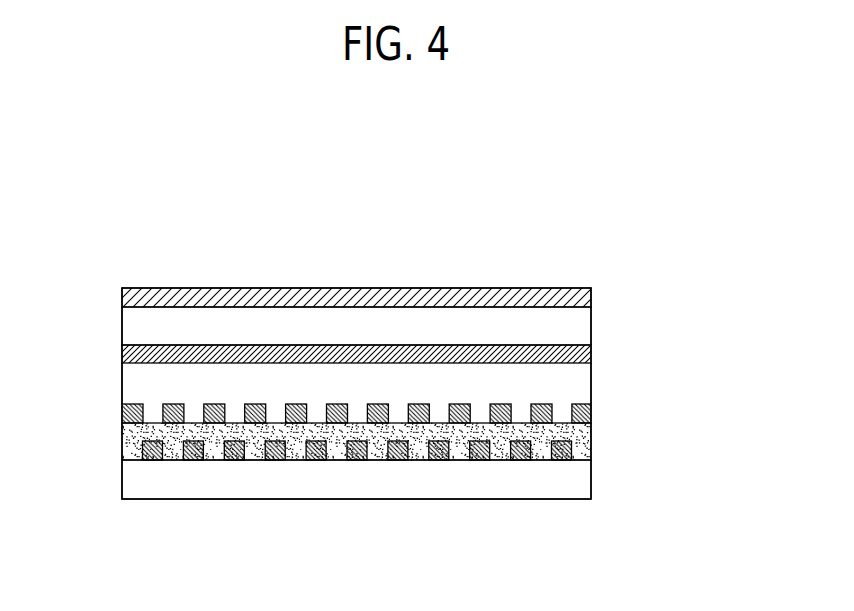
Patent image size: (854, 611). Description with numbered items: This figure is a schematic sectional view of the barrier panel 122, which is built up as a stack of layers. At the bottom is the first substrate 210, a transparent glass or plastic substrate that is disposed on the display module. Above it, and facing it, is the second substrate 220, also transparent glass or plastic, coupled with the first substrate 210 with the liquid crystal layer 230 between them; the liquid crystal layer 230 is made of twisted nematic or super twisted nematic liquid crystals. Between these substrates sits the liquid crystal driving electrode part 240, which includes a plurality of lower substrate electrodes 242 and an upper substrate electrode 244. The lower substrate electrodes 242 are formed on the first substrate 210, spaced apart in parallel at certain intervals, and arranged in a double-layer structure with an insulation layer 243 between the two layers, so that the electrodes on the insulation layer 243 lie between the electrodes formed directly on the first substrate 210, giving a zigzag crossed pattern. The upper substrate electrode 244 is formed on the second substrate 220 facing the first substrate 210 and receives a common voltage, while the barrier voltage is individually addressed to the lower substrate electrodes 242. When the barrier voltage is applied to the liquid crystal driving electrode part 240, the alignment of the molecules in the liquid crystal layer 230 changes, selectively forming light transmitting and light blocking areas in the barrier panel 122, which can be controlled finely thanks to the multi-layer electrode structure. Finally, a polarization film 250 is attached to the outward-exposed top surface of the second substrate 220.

The barrier panel 122 is at (100, 260).
The first substrate 210 is at (591, 480).
The second substrate 220 is at (591, 321).
The liquid crystal layer 230 is at (133, 385).
The liquid crystal driving electrode part 240 is at (429, 402).
The lower substrate electrodes 242 is at (591, 406).
The insulation layer 243 is at (591, 435).
The upper substrate electrode 244 is at (591, 350).
The polarization film 250 is at (591, 293).